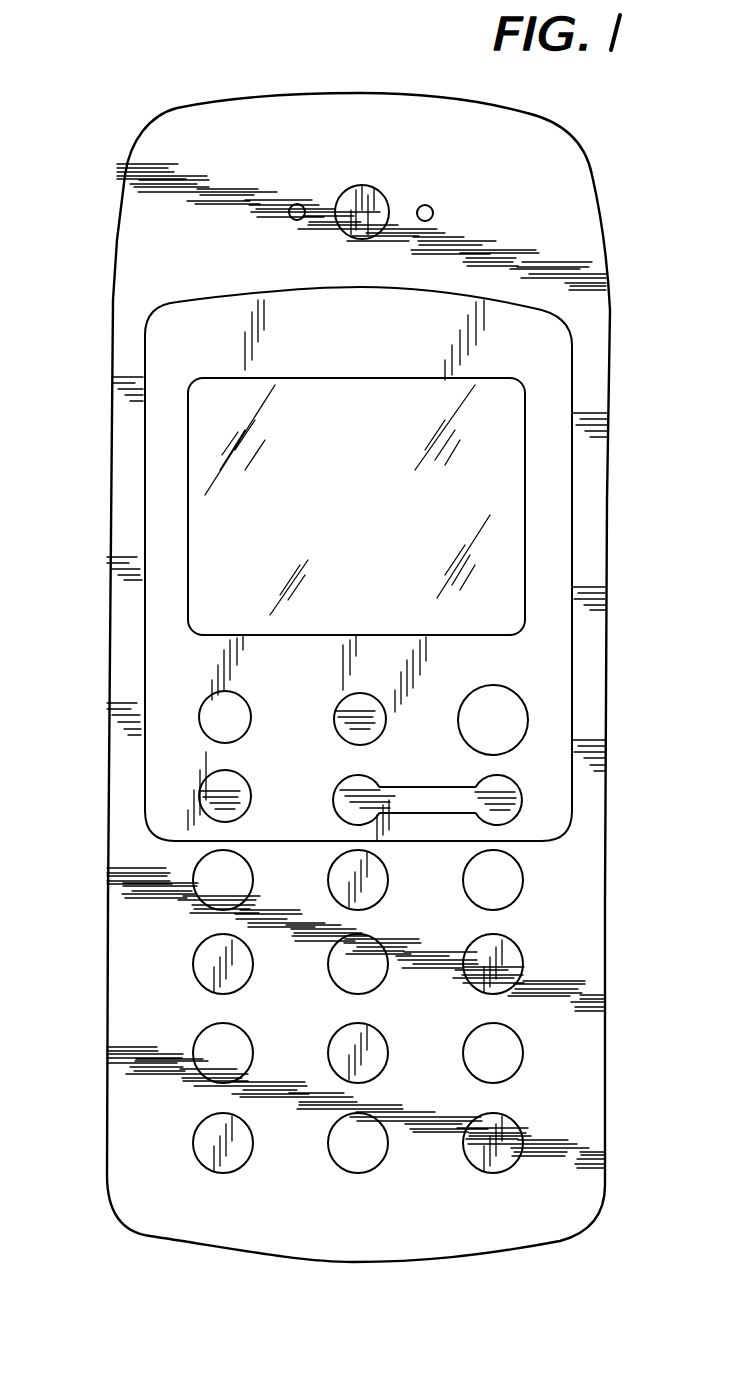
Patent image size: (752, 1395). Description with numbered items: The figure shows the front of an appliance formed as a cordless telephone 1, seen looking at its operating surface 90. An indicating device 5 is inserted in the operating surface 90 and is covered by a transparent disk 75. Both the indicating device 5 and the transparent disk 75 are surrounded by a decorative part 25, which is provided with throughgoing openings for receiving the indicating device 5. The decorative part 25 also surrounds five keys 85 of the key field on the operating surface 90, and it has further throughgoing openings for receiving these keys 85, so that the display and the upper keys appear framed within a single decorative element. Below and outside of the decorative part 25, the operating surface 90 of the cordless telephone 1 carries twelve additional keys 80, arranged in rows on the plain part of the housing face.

The cordless telephone 1 is at (600, 1210).
The indicating device 5 is at (503, 573).
The decorative part 25 is at (550, 798).
The transparent disk 75 is at (525, 500).
The keys 80 is at (522, 1048).
The keys 85 is at (198, 716).
The operating surface 90 is at (595, 1115).